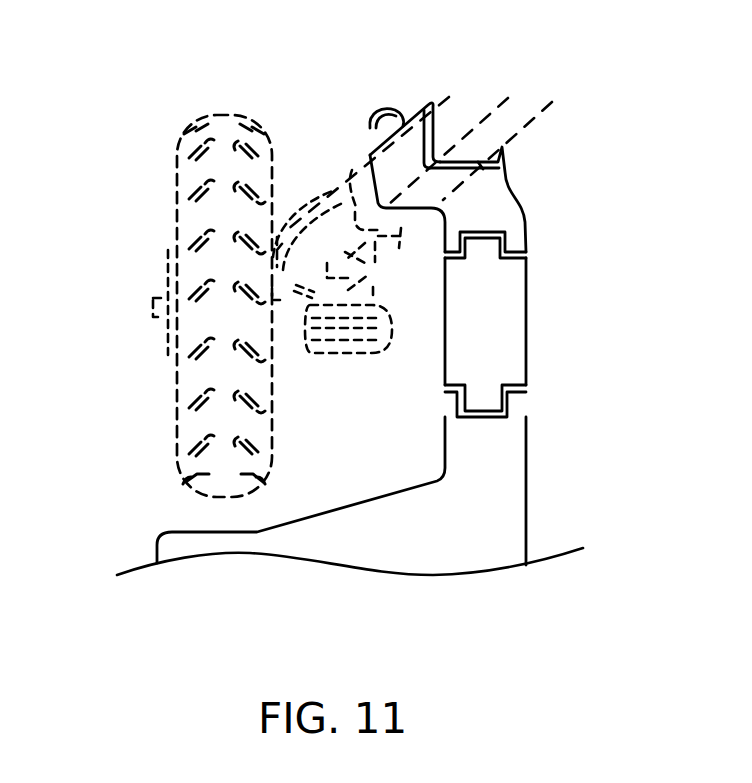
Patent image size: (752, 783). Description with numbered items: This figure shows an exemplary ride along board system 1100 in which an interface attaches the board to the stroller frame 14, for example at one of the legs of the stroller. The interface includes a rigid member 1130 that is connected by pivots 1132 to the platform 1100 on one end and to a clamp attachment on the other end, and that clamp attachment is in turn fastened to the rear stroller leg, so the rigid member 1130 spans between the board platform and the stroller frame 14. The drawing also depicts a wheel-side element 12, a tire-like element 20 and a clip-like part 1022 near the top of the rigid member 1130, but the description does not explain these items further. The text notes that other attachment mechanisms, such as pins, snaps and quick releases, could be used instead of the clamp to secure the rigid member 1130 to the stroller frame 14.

The wheel assembly 12 is at (155, 306).
The stroller frame 14 is at (510, 118).
The tire 20 is at (198, 172).
The clip 1022 is at (394, 106).
The ride along board system 1100 is at (408, 532).
The rigid member 1130 is at (498, 332).
The pivots 1132 is at (531, 258).